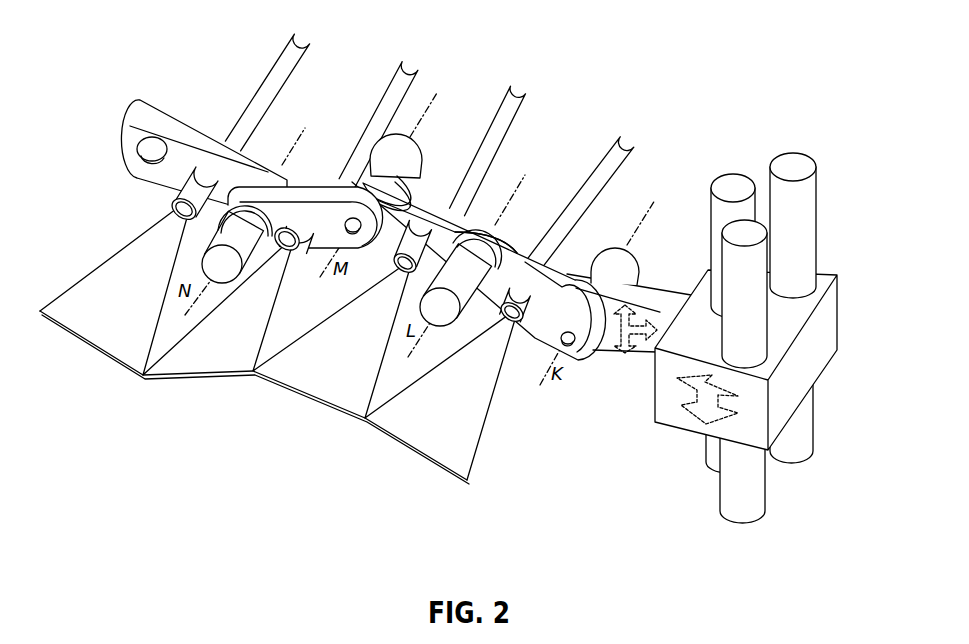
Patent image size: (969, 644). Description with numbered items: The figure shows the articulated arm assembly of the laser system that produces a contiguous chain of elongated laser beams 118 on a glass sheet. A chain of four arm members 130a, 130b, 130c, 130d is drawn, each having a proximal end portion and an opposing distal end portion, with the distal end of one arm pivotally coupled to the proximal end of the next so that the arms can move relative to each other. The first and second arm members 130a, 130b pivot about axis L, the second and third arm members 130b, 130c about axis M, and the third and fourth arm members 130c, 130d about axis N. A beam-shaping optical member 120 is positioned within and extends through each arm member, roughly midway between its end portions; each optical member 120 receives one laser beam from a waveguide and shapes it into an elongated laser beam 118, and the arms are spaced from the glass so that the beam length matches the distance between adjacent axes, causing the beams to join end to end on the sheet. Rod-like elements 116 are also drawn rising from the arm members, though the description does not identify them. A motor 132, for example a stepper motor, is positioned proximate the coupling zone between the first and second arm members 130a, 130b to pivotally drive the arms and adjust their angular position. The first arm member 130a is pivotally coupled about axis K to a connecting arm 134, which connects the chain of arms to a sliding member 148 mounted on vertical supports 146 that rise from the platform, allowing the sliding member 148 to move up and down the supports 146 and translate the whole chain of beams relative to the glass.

The connecting rod 116 is at (628, 160).
The elongated laser beam 118 is at (413, 420).
The beam-shaping optical member 120 is at (192, 192).
The first arm member 130a is at (521, 270).
The second arm member 130b is at (470, 217).
The third arm member 130c is at (310, 187).
The fourth arm member 130d is at (173, 127).
The motor 132 is at (412, 160).
The connecting arm 134 is at (651, 299).
The vertical support 146 is at (740, 477).
The sliding member 148 is at (820, 332).